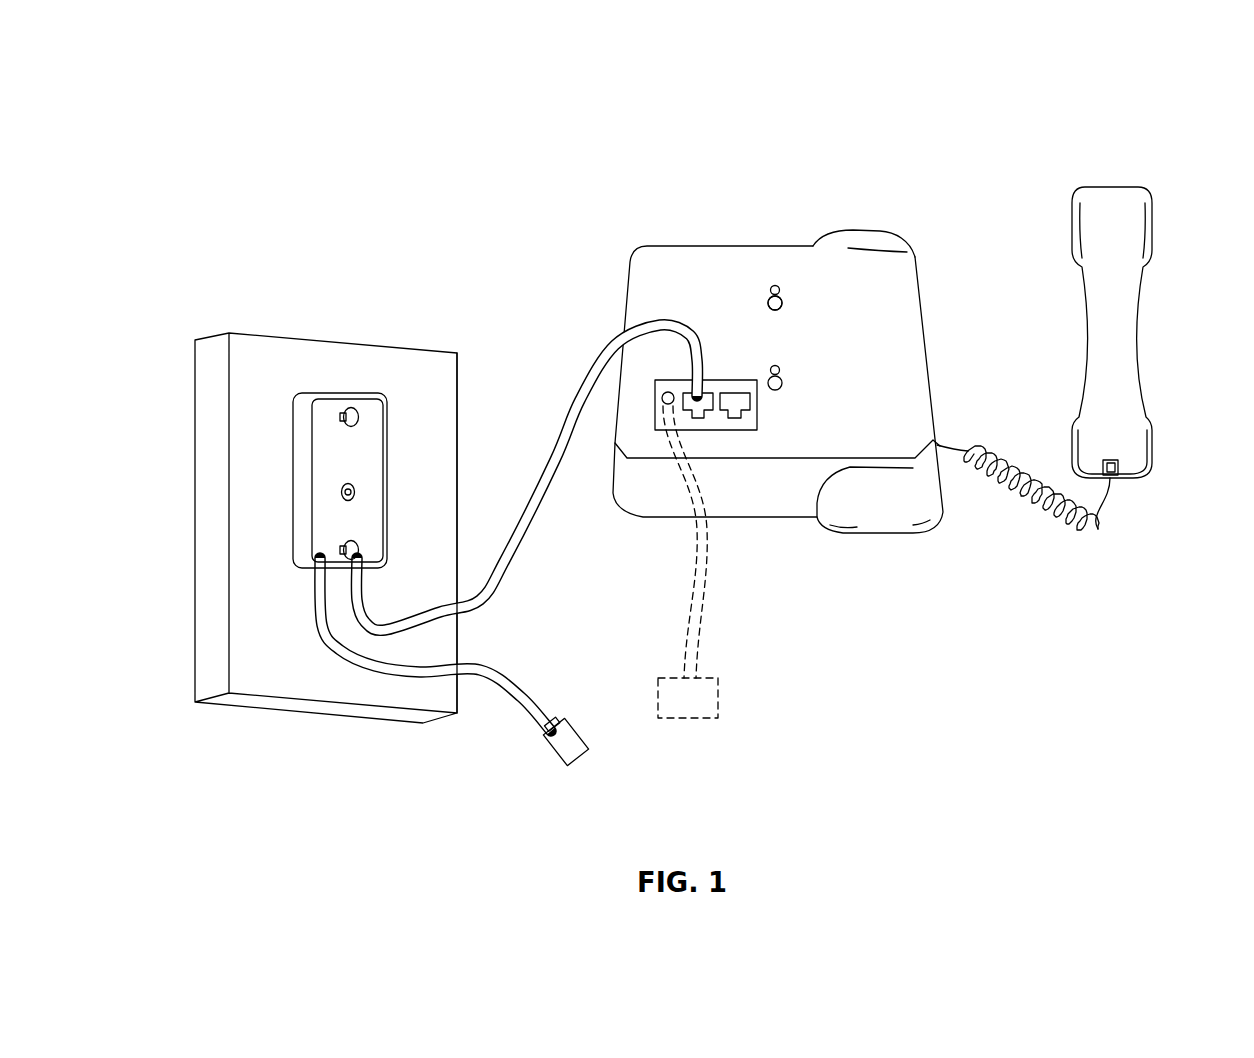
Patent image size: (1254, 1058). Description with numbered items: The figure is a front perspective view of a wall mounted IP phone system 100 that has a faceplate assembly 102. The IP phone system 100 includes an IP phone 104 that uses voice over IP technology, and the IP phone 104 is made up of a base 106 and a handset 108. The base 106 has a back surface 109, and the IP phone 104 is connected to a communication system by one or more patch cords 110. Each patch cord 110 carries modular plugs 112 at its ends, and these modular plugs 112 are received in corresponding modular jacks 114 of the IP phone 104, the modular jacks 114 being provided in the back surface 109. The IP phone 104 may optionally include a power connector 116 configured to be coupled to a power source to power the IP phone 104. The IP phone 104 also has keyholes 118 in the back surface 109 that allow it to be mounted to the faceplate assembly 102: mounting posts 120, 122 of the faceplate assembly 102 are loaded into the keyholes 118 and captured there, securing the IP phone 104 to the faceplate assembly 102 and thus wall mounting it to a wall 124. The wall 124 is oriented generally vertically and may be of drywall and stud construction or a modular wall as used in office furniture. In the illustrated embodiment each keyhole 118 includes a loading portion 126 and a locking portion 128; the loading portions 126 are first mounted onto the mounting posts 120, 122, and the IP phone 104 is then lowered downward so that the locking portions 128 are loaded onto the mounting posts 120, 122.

The IP phone system 100 is at (1100, 122).
The faceplate assembly 102 is at (319, 470).
The IP phone 104 is at (807, 353).
The base 106 is at (893, 277).
The handset 108 is at (1112, 322).
The back surface 109 is at (900, 362).
The patch cord 110 is at (568, 415).
The modular plug 112 is at (573, 752).
The modular jack 114 is at (735, 400).
The power connector 116 is at (662, 398).
The keyhole 118 is at (783, 307).
The mounting post 120 is at (342, 410).
The mounting post 122 is at (345, 542).
The wall 124 is at (273, 665).
The loading portion 126 is at (782, 298).
The locking portion 128 is at (770, 287).